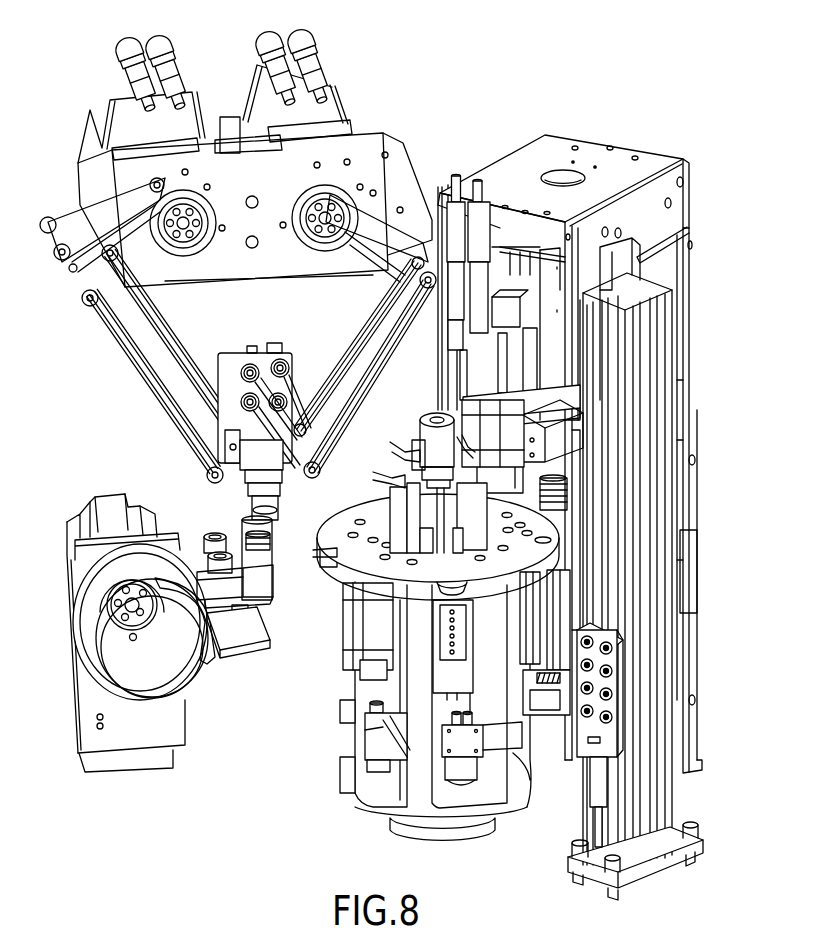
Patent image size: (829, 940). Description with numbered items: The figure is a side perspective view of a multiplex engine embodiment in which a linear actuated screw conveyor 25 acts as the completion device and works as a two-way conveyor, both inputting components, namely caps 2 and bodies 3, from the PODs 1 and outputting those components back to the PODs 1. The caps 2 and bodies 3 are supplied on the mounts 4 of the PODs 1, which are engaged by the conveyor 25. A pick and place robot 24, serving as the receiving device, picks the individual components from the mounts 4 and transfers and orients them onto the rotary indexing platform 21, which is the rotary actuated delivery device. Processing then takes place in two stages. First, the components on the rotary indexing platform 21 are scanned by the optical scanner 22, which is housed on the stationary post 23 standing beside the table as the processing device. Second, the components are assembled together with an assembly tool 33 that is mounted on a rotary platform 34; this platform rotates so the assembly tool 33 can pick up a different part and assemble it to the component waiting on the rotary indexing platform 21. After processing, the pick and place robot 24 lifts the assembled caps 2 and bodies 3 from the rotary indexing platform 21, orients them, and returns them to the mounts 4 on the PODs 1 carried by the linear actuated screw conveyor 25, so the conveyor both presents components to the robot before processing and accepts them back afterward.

The POD 1 is at (262, 648).
The cap 2 is at (273, 538).
The body 3 is at (215, 530).
The mount 4 is at (270, 563).
The rotary indexing platform 21 is at (397, 790).
The optical scanner 22 is at (566, 488).
The stationary post 23 is at (677, 777).
The pick and place robot 24 is at (362, 129).
The linear actuated screw conveyor 25 is at (77, 517).
The assembly tool 33 is at (501, 275).
The rotary platform 34 is at (683, 280).